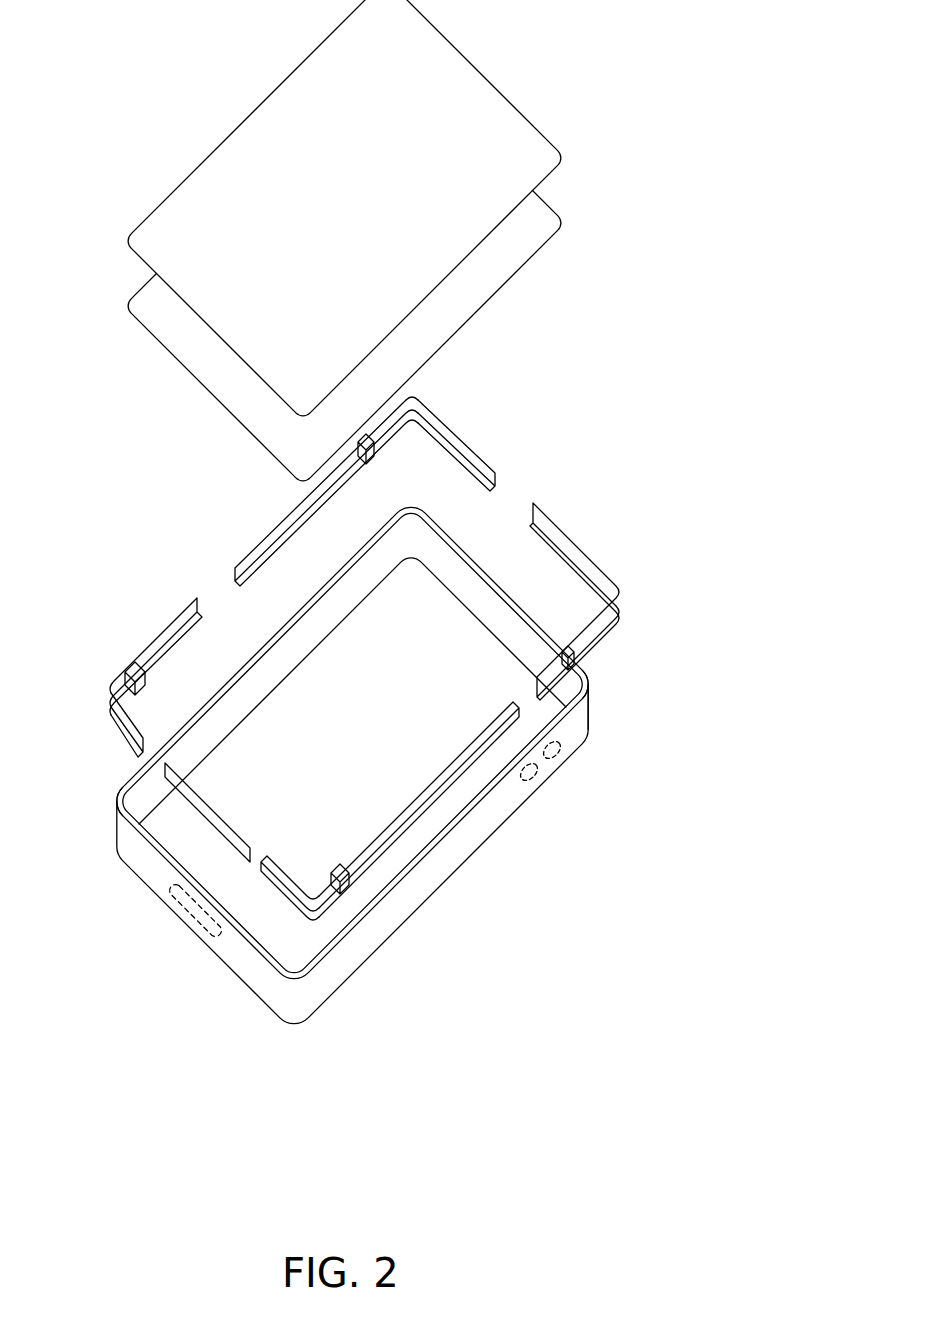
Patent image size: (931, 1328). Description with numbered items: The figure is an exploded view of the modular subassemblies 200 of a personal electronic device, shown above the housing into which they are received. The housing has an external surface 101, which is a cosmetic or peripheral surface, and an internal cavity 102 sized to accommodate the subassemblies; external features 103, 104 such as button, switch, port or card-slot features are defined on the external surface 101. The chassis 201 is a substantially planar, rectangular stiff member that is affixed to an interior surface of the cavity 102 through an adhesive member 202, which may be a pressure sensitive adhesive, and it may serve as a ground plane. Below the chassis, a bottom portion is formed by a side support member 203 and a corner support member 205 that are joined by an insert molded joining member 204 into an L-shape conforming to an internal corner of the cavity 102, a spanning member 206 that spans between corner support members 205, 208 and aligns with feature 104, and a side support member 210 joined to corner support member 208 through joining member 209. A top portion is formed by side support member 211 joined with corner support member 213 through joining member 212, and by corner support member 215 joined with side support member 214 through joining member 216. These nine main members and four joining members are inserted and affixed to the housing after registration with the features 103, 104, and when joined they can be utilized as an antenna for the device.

The modular subassemblies 200 is at (657, 30).
The chassis 201 is at (233, 147).
The adhesive member 202 is at (145, 316).
The external surface 101 is at (492, 812).
The internal cavity 102 is at (141, 791).
The external feature 103 is at (558, 752).
The external feature 104 is at (184, 919).
The side support member 203 is at (184, 612).
The joining member 204 is at (126, 665).
The corner support member 205 is at (108, 712).
The spanning member 206 is at (194, 790).
The corner support member 208 is at (320, 907).
The joining member 209 is at (350, 892).
The side support member 210 is at (400, 842).
The side support member 211 is at (588, 706).
The joining member 212 is at (578, 667).
The corner support member 213 is at (594, 640).
The side support member 214 is at (259, 543).
The corner support member 215 is at (449, 426).
The joining member 216 is at (374, 462).